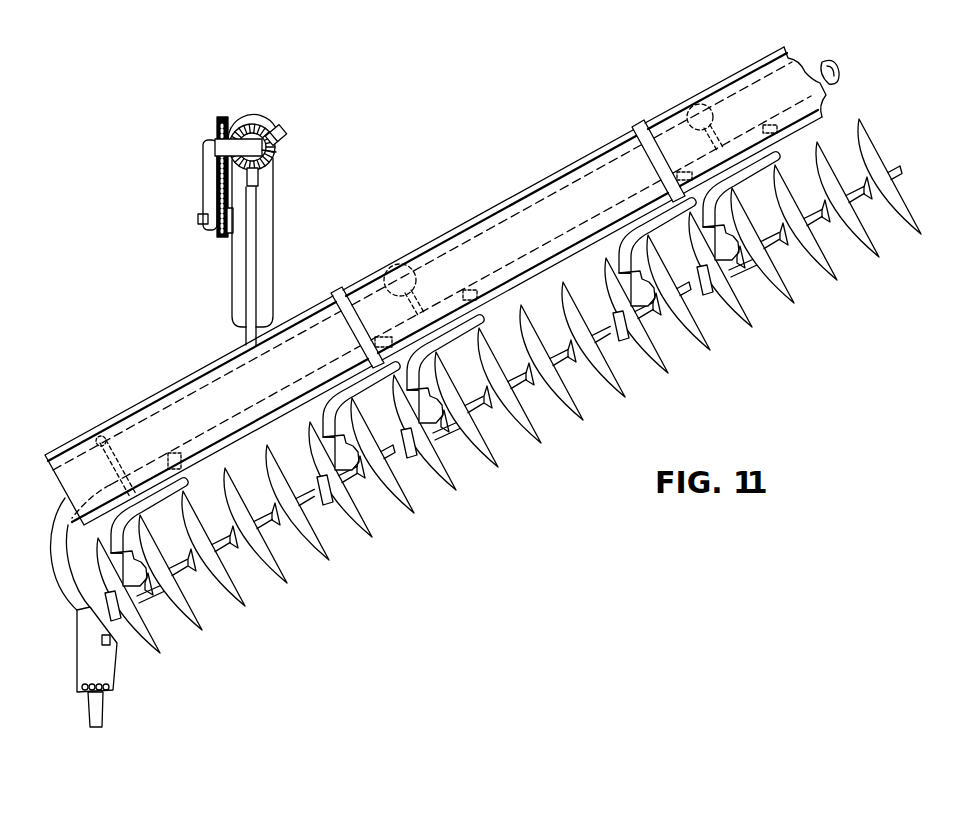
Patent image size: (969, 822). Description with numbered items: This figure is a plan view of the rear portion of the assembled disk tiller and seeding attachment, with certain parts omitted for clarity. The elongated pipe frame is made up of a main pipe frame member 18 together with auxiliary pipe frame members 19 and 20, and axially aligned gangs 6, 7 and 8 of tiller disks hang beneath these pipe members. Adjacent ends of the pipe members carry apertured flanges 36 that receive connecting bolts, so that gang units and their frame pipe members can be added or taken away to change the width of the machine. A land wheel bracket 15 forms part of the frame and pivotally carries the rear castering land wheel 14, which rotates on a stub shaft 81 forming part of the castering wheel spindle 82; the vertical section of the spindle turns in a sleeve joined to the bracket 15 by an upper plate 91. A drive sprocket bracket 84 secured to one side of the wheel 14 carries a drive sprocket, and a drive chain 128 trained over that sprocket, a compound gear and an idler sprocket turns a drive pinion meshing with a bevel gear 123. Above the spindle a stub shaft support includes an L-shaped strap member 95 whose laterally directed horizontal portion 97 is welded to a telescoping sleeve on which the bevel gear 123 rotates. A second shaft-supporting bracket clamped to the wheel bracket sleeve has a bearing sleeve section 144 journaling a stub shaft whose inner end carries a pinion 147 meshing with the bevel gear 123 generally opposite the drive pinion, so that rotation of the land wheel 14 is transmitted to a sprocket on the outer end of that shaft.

The gang of tiller disks 6 is at (855, 272).
The gang of tiller disks 7 is at (641, 395).
The gang of tiller disks 8 is at (307, 579).
The rear castering land wheel 14 is at (265, 202).
The land wheel bracket 15 is at (250, 254).
The main pipe frame member 18 is at (828, 90).
The auxiliary pipe frame member 19 is at (492, 232).
The auxiliary pipe frame member 20 is at (174, 408).
The flange 36 is at (402, 270).
The stub shaft 81 is at (200, 221).
The castering wheel spindle 82 is at (199, 163).
The drive sprocket bracket 84 is at (227, 237).
The upper plate 91 is at (258, 178).
The L-shaped strap member 95 is at (246, 125).
The horizontal portion 97 is at (217, 178).
The bevel gear 123 is at (254, 126).
The drive chain 128 is at (212, 198).
The bearing sleeve section 144 is at (285, 131).
The pinion 147 is at (276, 152).